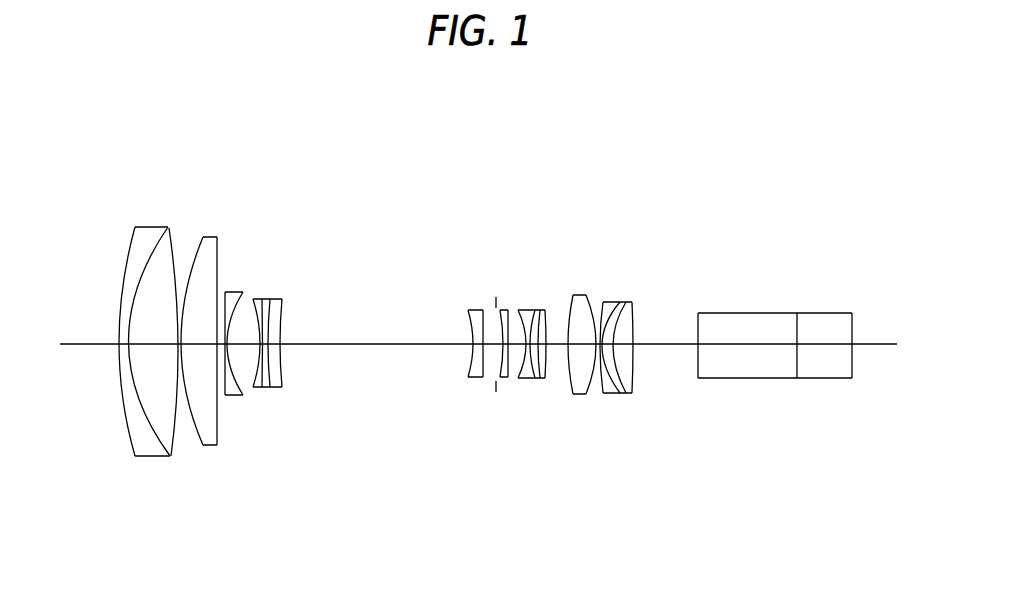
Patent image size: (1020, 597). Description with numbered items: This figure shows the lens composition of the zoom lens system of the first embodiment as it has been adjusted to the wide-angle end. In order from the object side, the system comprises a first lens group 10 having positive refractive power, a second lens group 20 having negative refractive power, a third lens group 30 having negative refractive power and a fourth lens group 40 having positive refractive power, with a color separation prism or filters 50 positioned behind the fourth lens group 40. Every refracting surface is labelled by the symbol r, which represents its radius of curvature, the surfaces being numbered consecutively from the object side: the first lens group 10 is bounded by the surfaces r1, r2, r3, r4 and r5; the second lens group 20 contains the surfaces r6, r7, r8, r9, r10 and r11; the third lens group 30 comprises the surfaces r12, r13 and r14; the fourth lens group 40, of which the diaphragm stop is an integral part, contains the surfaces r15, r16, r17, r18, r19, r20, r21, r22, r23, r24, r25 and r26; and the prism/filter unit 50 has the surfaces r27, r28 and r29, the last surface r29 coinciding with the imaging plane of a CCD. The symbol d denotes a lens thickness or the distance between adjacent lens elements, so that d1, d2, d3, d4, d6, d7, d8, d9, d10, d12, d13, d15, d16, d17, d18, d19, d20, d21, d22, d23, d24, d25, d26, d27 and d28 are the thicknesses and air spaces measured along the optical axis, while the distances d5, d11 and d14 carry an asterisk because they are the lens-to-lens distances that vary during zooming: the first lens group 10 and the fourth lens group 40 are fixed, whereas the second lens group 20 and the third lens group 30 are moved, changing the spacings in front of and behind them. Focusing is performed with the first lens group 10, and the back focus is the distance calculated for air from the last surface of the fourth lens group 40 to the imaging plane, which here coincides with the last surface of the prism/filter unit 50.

The first lens group 10 is at (240, 141).
The second lens group 20 is at (234, 172).
The third lens group 30 is at (510, 141).
The fourth lens group 40 is at (795, 141).
The color separation prism or filters 50 is at (900, 141).
The first lens surface r1 is at (135, 227).
The second lens surface r2 is at (166, 227).
The third lens surface r3 is at (171, 228).
The fourth lens surface r4 is at (203, 237).
The fifth lens surface r5 is at (217, 237).
The sixth lens surface r6 is at (225, 292).
The seventh lens surface r7 is at (243, 292).
The eighth lens surface r8 is at (253, 299).
The ninth lens surface r9 is at (262, 299).
The tenth lens surface r10 is at (270, 299).
The eleventh lens surface r11 is at (282, 299).
The twelfth lens surface r12 is at (468, 310).
The thirteenth lens surface r13 is at (483, 310).
The fourteenth surface r14 is at (496, 297).
The fifteenth lens surface r15 is at (500, 310).
The sixteenth lens surface r16 is at (508, 310).
The seventeenth lens surface r17 is at (518, 310).
The eighteenth lens surface r18 is at (535, 310).
The nineteenth lens surface r19 is at (540, 310).
The twentieth lens surface r20 is at (545, 310).
The twenty-first lens surface r21 is at (573, 295).
The twenty-second lens surface r22 is at (586, 295).
The twenty-third lens surface r23 is at (603, 302).
The twenty-fourth lens surface r24 is at (620, 302).
The twenty-fifth lens surface r25 is at (626, 302).
The twenty-sixth lens surface r26 is at (632, 302).
The twenty-seventh surface r27 is at (698, 313).
The twenty-eighth surface r28 is at (797, 313).
The last surface of prism/filter unit r29 is at (852, 313).
The first axial distance d1 is at (124, 344).
The second axial distance d2 is at (153, 344).
The third axial distance d3 is at (178, 344).
The fourth axial distance d4 is at (197, 344).
The fifth axial distance d5 is at (218, 344).
The sixth axial distance d6 is at (226, 344).
The seventh axial distance d7 is at (240, 344).
The eighth axial distance d8 is at (261, 344).
The ninth axial distance d9 is at (265, 344).
The tenth axial distance d10 is at (274, 344).
The eleventh axial distance d11 is at (377, 344).
The twelfth axial distance d12 is at (477, 344).
The thirteenth axial distance d13 is at (490, 344).
The fourteenth axial distance d14 is at (500, 344).
The fifteenth axial distance d15 is at (505, 344).
The sixteenth axial distance d16 is at (517, 344).
The seventeenth axial distance d17 is at (528, 344).
The eighteenth axial distance d18 is at (534, 344).
The nineteenth axial distance d19 is at (541, 344).
The twentieth axial distance d20 is at (556, 344).
The twenty-first axial distance d21 is at (582, 344).
The twenty-second axial distance d22 is at (598, 344).
The twenty-third axial distance d23 is at (601, 344).
The twenty-fourth axial distance d24 is at (607, 344).
The twenty-fifth axial distance d25 is at (623, 344).
The twenty-sixth axial distance d26 is at (665, 344).
The twenty-seventh axial distance d27 is at (747, 344).
The twenty-eighth axial distance d28 is at (825, 344).